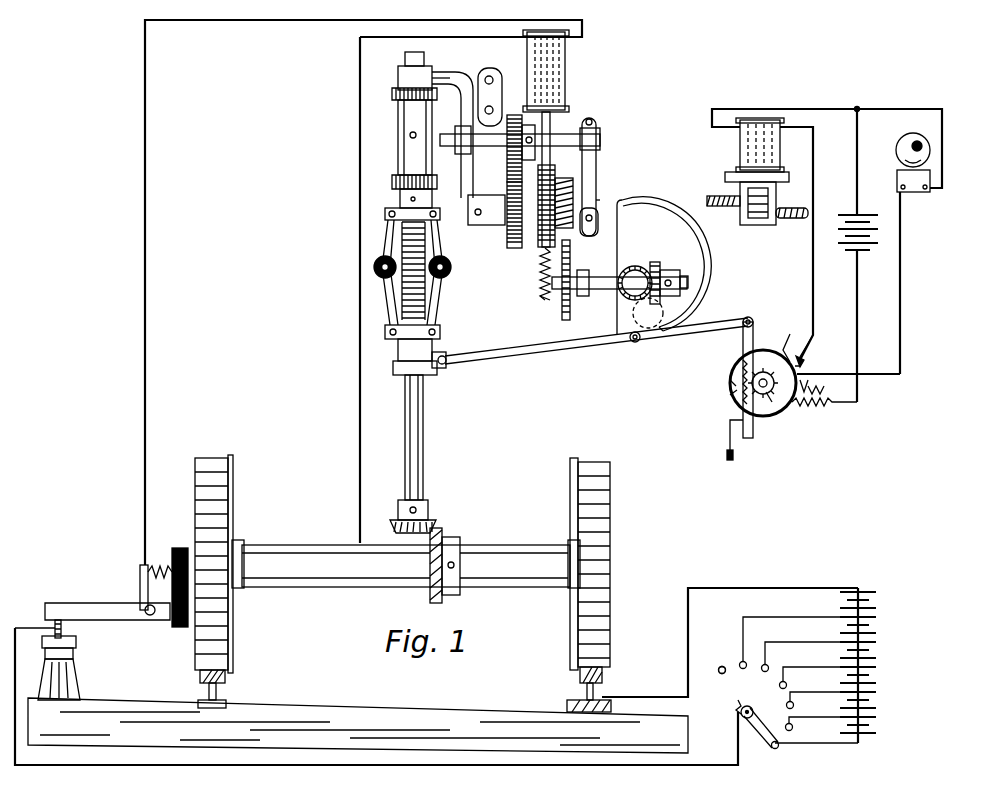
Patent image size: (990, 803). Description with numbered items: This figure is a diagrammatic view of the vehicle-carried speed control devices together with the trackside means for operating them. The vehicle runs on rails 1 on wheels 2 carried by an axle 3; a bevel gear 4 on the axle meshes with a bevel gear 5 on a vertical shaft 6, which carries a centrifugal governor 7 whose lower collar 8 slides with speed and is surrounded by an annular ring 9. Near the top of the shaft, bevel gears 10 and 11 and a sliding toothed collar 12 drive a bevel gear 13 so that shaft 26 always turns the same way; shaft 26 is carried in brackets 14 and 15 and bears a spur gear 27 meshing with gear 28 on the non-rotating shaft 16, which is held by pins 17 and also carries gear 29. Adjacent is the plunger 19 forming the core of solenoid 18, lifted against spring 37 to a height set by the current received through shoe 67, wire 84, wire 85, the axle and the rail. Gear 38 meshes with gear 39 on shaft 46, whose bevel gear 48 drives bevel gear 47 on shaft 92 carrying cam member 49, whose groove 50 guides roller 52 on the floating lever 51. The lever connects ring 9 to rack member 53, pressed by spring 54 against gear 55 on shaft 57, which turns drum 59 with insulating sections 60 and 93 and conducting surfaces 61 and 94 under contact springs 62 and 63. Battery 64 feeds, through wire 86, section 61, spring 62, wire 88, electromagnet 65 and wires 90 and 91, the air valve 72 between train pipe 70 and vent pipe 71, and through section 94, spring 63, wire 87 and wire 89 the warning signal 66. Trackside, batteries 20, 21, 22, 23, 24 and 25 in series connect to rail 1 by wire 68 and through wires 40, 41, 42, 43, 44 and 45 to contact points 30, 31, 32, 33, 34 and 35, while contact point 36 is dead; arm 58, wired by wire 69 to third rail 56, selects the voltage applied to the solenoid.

The rails 1 is at (218, 690).
The wheels 2 is at (233, 616).
The axle 3 is at (508, 545).
The bevel gear 4 is at (440, 528).
The bevel gear 5 is at (428, 512).
The vertical shaft 6 is at (424, 446).
The centrifugal governor 7 is at (452, 267).
The lower collar 8 is at (440, 345).
The annular ring 9 is at (446, 366).
The bevel gear 10 is at (394, 181).
The bevel gear 11 is at (395, 96).
The collar 12 is at (398, 137).
The bevel gear 13 is at (440, 75).
The bracket 14 is at (478, 70).
The bracket 15 is at (596, 168).
The shaft 16 is at (598, 210).
The pins 17 is at (474, 220).
The solenoid 18 is at (569, 76).
The plunger 19 is at (552, 118).
The battery 20 is at (878, 598).
The battery 21 is at (878, 624).
The battery 22 is at (878, 650).
The battery 23 is at (878, 676).
The battery 24 is at (878, 702).
The battery 25 is at (878, 730).
The shaft 26 is at (600, 139).
The spur gear 27 is at (516, 115).
The gear 28 is at (512, 248).
The gear 29 is at (538, 282).
The contact point 30 is at (721, 674).
The contact point 31 is at (742, 669).
The contact point 32 is at (764, 672).
The contact point 33 is at (782, 689).
The contact point 34 is at (792, 709).
The contact point 35 is at (788, 731).
The contact point 36 is at (717, 658).
The spring 37 is at (543, 300).
The gear 38 is at (557, 176).
The gear 39 is at (571, 258).
The wire 40 is at (800, 632).
The wire 41 is at (811, 645).
The wire 42 is at (820, 665).
The wire 43 is at (824, 688).
The wire 44 is at (823, 712).
The wire 45 is at (816, 734).
The shaft 46 is at (594, 292).
The bevel gear 47 is at (635, 266).
The bevel gear 48 is at (655, 262).
The cam member 49 is at (656, 222).
The groove 50 is at (704, 292).
The floating lever 51 is at (575, 343).
The roller 52 is at (637, 343).
The member 53 is at (753, 430).
The spring 54 is at (735, 455).
The gear 55 is at (772, 402).
The third rail 56 is at (66, 633).
The shaft 57 is at (766, 364).
The arm 58 is at (750, 730).
The drum 59 is at (730, 395).
The insulating section 60 is at (731, 386).
The conducting surface 61 is at (806, 358).
The contact spring 62 is at (794, 341).
The contact spring 63 is at (806, 372).
The battery 64 is at (860, 214).
The electromagnet 65 is at (760, 120).
The warning signal 66 is at (922, 180).
The shoe 67 is at (86, 603).
The wire 68 is at (756, 590).
The wire 69 is at (690, 765).
The train pipe 70 is at (716, 196).
The pipe 71 is at (790, 218).
The air valve 72 is at (776, 200).
The wire 84 is at (147, 336).
The wire 85 is at (359, 383).
The wire 86 is at (858, 300).
The wire 87 is at (900, 335).
The wire 88 is at (813, 292).
The wire 89 is at (892, 109).
The wire 90 is at (811, 109).
The wire 91 is at (857, 158).
The shaft 92 is at (648, 313).
The insulating section 93 is at (820, 384).
The conducting surface 94 is at (825, 405).